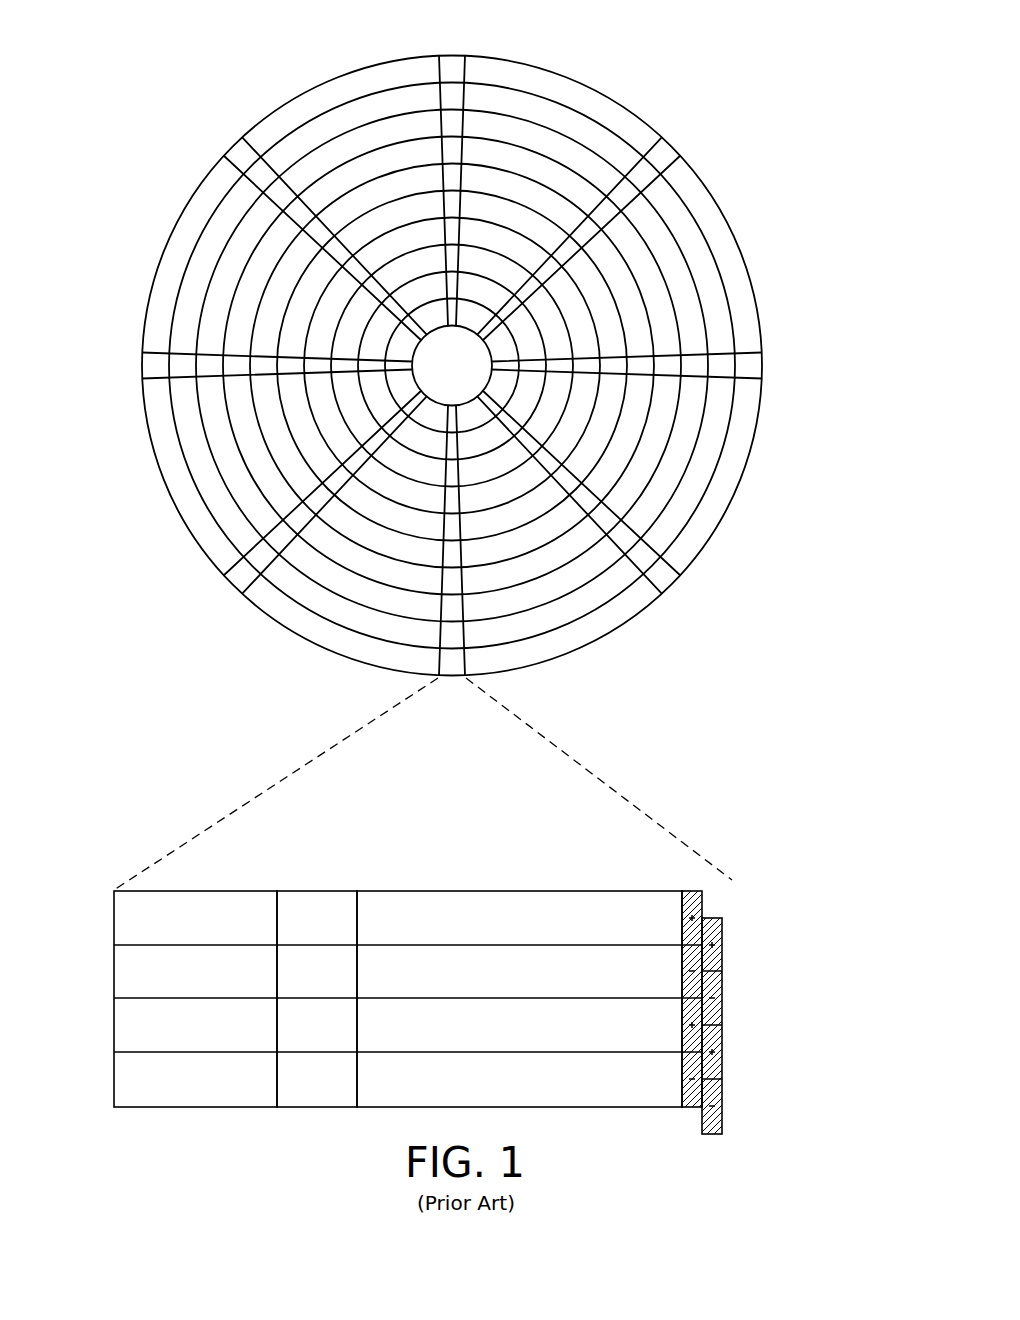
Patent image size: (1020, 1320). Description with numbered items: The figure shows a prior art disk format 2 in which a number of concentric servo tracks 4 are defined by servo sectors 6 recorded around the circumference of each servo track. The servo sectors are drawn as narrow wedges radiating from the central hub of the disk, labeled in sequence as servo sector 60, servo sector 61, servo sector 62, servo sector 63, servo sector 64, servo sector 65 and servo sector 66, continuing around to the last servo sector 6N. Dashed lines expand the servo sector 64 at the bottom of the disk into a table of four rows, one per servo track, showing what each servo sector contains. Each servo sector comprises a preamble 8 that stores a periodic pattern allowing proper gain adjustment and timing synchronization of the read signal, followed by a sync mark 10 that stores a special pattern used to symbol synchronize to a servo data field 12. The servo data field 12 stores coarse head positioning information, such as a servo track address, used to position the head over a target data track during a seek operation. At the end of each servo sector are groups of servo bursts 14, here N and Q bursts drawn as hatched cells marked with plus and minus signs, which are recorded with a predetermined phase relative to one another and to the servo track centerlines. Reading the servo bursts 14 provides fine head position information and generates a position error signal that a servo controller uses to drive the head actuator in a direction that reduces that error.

The disk format 2 is at (222, 57).
The servo track 4 is at (557, 118).
The servo sector 6 is at (451, 375).
The servo sector 60 is at (453, 63).
The servo sector 61 is at (663, 152).
The servo sector 62 is at (753, 367).
The servo sector 63 is at (663, 577).
The servo sector 64 is at (313, 745).
The servo sector 65 is at (238, 578).
The servo sector 66 is at (148, 363).
The servo sector 6N is at (250, 142).
The preamble 8 is at (200, 890).
The sync mark 10 is at (317, 890).
The servo data field 12 is at (507, 890).
The servo bursts 14 is at (720, 887).